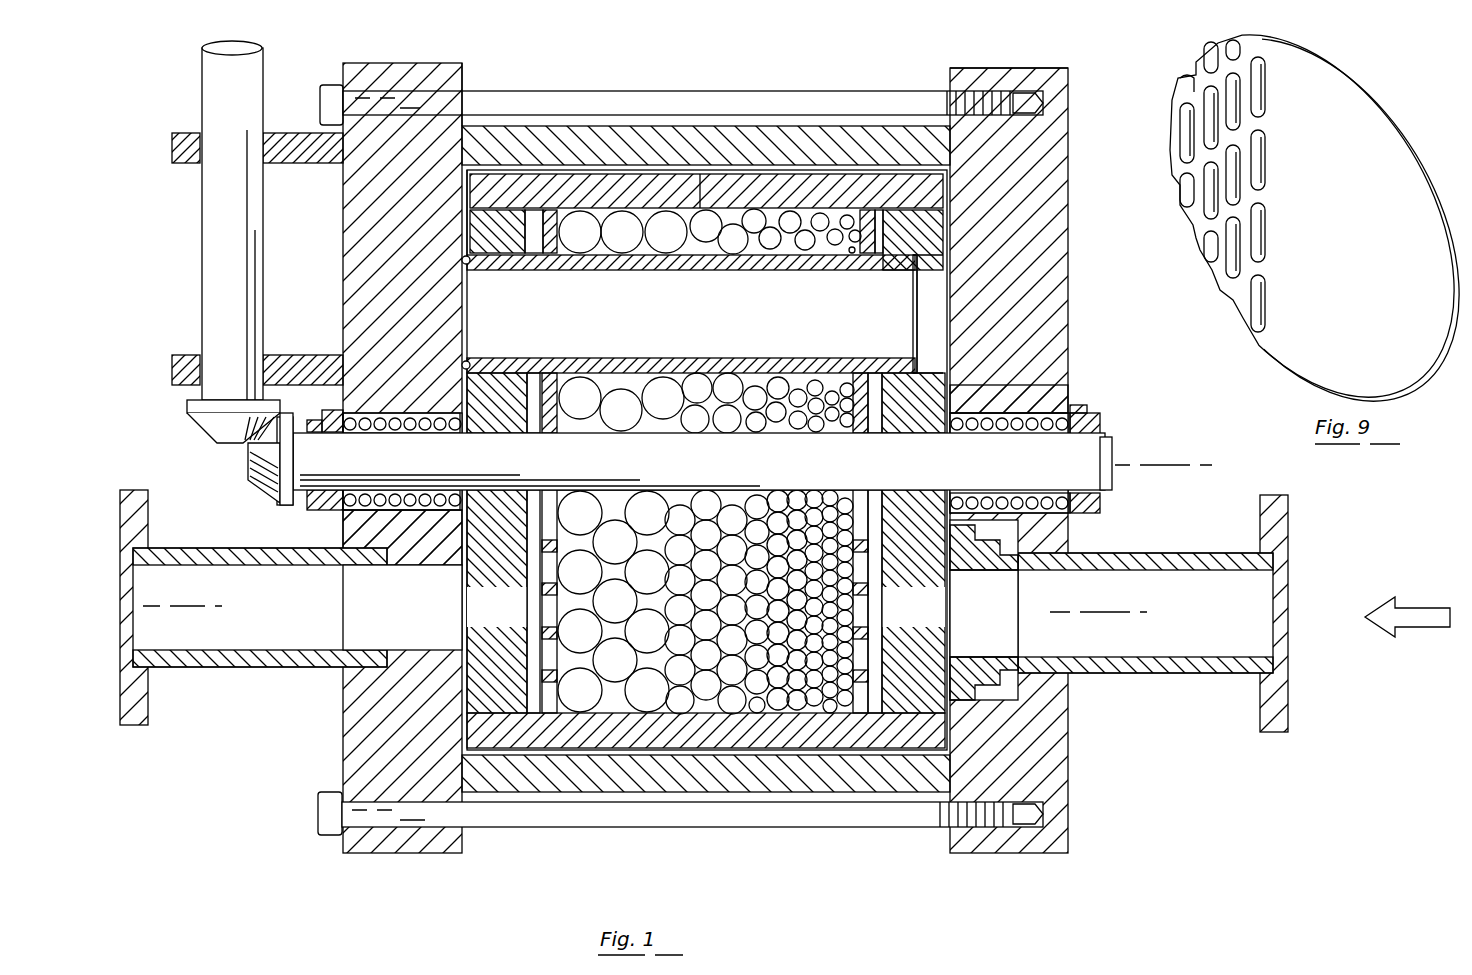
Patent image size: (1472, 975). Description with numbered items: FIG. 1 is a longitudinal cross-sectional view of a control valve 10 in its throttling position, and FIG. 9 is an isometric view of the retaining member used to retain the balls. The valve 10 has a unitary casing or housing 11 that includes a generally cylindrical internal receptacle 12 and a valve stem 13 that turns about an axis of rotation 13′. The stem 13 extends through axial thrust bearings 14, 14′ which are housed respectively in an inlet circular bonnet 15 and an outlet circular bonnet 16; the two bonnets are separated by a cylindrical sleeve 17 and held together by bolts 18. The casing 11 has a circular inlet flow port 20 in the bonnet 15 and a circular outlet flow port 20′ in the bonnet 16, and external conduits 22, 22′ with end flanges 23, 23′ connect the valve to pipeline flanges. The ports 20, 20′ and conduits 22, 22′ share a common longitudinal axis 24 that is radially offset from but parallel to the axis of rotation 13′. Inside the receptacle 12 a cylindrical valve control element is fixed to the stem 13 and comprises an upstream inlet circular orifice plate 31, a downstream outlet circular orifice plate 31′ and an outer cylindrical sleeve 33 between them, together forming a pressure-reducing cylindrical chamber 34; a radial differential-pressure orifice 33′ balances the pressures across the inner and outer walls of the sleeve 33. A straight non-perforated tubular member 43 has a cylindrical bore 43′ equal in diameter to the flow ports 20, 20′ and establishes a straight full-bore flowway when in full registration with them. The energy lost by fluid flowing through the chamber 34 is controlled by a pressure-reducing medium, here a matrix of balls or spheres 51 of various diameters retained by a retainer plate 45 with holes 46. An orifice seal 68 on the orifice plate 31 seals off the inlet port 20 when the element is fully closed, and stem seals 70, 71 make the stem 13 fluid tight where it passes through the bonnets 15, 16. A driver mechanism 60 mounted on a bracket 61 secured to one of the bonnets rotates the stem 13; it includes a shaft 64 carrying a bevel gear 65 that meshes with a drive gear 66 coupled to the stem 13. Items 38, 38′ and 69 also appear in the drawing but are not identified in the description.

In FIG. 1, the valve 10 is at (708, 88).
In FIG. 1, the casing or housing 11 is at (1069, 70).
In FIG. 1, the internal receptacle 12 is at (860, 756).
In FIG. 1, the valve stem 13 is at (789, 475).
In FIG. 1, the axis of rotation 13′ is at (1212, 465).
In FIG. 1, the axial thrust bearing 14 is at (1072, 352).
In FIG. 1, the axial thrust bearing 14′ is at (357, 512).
In FIG. 1, the inlet circular bonnet 15 is at (1068, 285).
In FIG. 1, the outlet circular bonnet 16 is at (338, 298).
In FIG. 1, the cylindrical sleeve 17 is at (743, 780).
In FIG. 1, the bolts 18 is at (917, 828).
In FIG. 1, the inlet flow port 20 is at (948, 605).
In FIG. 1, the outlet flow port 20′ is at (458, 637).
In FIG. 1, the external conduit 22 is at (1185, 673).
In FIG. 1, the external conduit 22′ is at (220, 667).
In FIG. 1, the end flange 23 is at (1275, 733).
In FIG. 1, the end flange 23′ is at (133, 725).
In FIG. 1, the common longitudinal axis 24 is at (180, 606).
In FIG. 1, the upstream inlet circular orifice plate 31 is at (933, 360).
In FIG. 1, the downstream outlet circular orifice plate 31′ is at (463, 66).
In FIG. 1, the outer cylindrical sleeve 33 is at (680, 733).
In FIG. 1, the radial differential-pressure orifice 33′ is at (660, 235).
In FIG. 1, the pressure-reducing cylindrical chamber 34 is at (610, 705).
In FIG. 1, the spacer block 38 is at (891, 619).
In FIG. 1, the spacer block 38′ is at (476, 619).
In FIG. 1, the tubular member 43 is at (660, 357).
In FIG. 1, the cylindrical bore 43′ is at (913, 292).
In FIG. 1, the retainer plate 45 is at (552, 212).
In FIG. 9, the retainer plate 45 is at (1360, 80).
In FIG. 9, the holes 46 is at (1266, 225).
In FIG. 1, the balls or spheres 51 is at (618, 493).
In FIG. 1, the driver mechanism 60 is at (202, 97).
In FIG. 1, the bracket 61 is at (276, 133).
In FIG. 1, the shaft 64 is at (202, 300).
In FIG. 1, the bevel gear 65 is at (198, 430).
In FIG. 1, the drive gear 66 is at (258, 487).
In FIG. 1, the orifice seal 68 is at (958, 658).
In FIG. 1, the pin 69 is at (470, 268).
In FIG. 1, the stem seal 70 is at (1092, 410).
In FIG. 1, the stem seal 71 is at (330, 398).